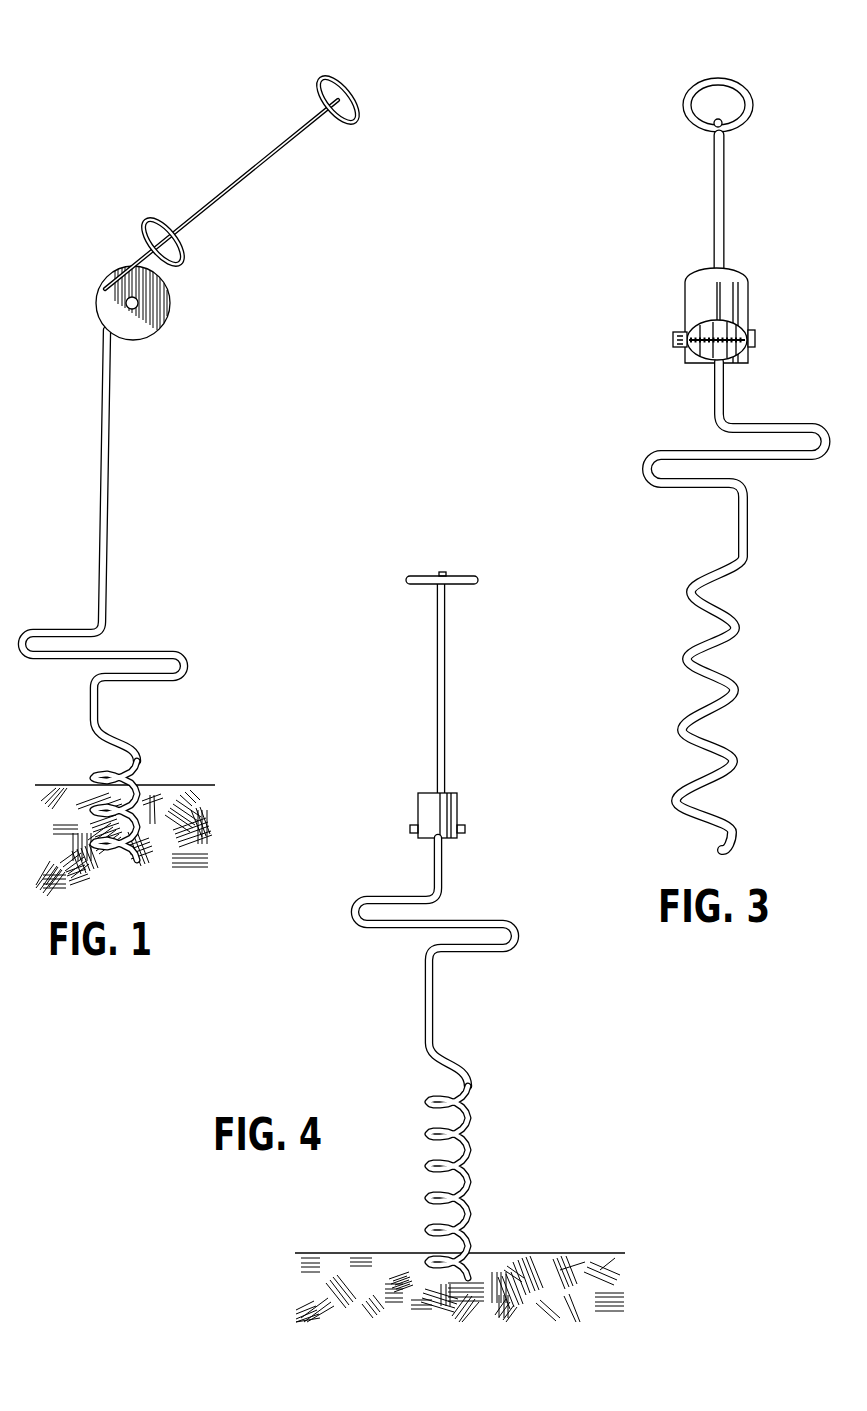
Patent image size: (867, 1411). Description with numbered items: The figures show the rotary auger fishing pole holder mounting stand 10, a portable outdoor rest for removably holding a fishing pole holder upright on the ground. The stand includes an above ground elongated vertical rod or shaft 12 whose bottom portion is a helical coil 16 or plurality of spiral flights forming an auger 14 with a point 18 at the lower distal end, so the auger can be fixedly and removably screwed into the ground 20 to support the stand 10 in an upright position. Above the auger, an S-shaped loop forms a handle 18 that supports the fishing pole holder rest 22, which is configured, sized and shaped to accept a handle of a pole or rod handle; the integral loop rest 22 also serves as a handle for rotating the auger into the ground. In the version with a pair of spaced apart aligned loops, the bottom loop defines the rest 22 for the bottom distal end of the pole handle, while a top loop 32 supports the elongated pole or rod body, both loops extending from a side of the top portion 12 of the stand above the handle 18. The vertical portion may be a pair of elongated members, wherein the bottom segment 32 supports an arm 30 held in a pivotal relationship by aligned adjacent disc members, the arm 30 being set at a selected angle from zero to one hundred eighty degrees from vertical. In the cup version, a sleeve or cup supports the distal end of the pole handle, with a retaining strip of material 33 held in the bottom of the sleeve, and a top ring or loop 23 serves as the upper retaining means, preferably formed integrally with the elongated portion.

In FIG. 1, the rotary auger fishing pole holder mounting stand 10 is at (193, 462).
In FIG. 4, the elongated vertical rod or shaft 12 is at (438, 767).
In FIG. 4, the auger 14 is at (430, 1100).
In FIG. 4, the helical coil 16 is at (470, 1182).
In FIG. 4, the S-shaped handle / point 18 is at (466, 1062).
In FIG. 4, the ground 20 is at (553, 1253).
In FIG. 1, the rest 22 is at (145, 220).
In FIG. 1, the top ring or loop 23 is at (313, 82).
In FIG. 1, the arm 30 is at (237, 180).
In FIG. 1, the top loop / bottom segment 32 is at (110, 543).
In FIG. 3, the strip of material 33 is at (725, 343).